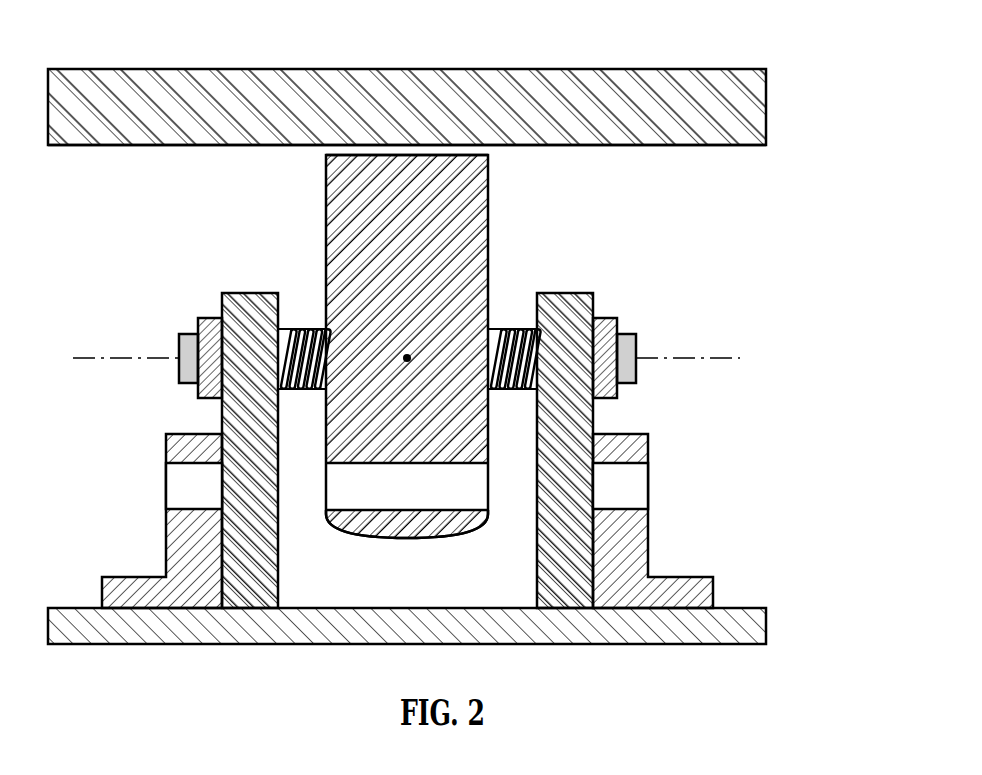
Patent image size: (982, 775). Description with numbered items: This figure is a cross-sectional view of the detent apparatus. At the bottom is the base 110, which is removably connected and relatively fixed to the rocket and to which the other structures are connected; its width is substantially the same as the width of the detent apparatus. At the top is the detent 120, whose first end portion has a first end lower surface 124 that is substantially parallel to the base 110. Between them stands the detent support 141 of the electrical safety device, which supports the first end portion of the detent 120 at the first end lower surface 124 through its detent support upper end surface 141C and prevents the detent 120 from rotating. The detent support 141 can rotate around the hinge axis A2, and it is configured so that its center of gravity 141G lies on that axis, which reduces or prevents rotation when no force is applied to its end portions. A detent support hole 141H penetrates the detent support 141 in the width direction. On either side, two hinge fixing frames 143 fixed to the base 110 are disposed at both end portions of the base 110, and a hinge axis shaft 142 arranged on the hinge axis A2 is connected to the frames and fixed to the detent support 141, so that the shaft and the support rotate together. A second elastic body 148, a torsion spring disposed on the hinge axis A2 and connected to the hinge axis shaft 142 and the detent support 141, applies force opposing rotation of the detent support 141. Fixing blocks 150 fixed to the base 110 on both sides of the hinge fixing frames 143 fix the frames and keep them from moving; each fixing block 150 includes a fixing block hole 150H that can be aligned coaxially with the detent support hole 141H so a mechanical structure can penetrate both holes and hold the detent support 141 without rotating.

The base 110 is at (766, 623).
The detent 120 is at (766, 105).
The first end lower surface 124 is at (723, 145).
The detent support 141 is at (488, 200).
The detent support upper end surface 141C is at (407, 155).
The center of gravity 141G is at (407, 362).
The detent support hole 141H is at (356, 502).
The hinge axis shaft 142 is at (641, 334).
The hinge fixing frame 143 is at (222, 410).
The second elastic body 148 is at (508, 328).
The fixing block 150 is at (102, 590).
The fixing block hole 150H is at (195, 510).
The hinge axis A2 is at (391, 358).